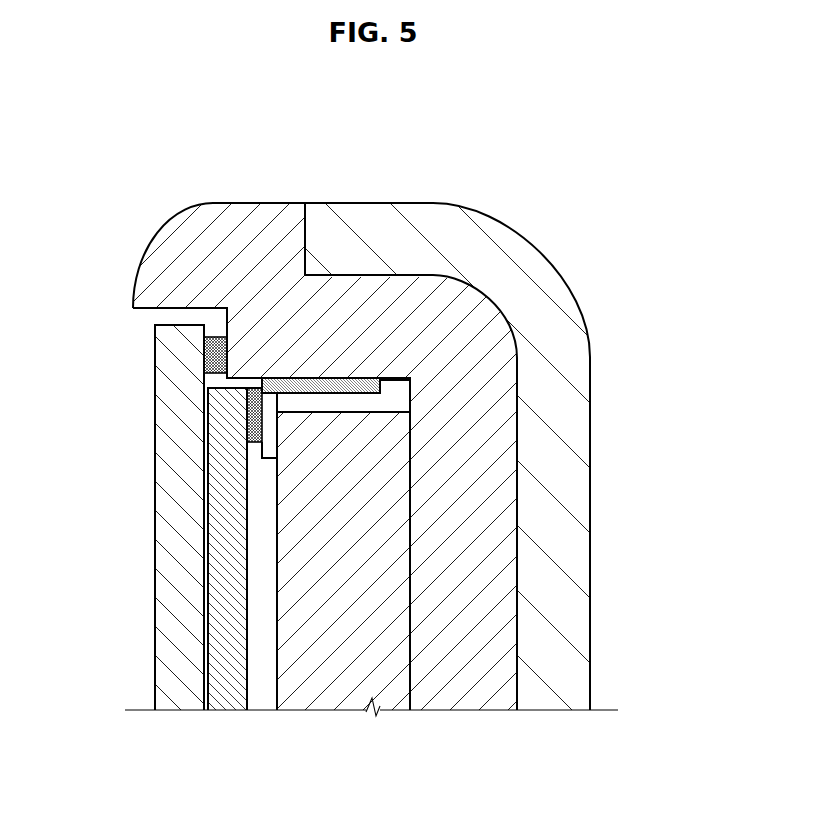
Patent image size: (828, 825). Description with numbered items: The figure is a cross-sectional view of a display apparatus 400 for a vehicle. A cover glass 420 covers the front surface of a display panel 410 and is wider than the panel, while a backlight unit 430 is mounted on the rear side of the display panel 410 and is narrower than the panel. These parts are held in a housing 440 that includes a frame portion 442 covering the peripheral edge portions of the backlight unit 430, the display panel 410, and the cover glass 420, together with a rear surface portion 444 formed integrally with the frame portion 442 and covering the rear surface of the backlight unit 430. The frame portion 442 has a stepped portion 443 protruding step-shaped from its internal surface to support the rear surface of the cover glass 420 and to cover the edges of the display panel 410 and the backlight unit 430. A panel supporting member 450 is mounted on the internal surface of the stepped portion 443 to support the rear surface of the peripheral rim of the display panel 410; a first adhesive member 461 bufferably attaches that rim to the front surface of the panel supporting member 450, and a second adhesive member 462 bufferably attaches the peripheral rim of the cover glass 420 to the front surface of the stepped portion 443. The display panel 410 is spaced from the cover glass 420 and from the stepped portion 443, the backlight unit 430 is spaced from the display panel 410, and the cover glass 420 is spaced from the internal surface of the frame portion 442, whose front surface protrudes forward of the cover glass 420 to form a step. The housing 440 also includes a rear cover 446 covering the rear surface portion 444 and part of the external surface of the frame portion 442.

The display apparatus 400 is at (370, 451).
The display panel 410 is at (217, 550).
The cover glass 420 is at (166, 497).
The backlight unit 430 is at (333, 690).
The housing 440 is at (417, 427).
The frame portion 442 is at (216, 240).
The stepped portion 443 is at (238, 365).
The rear surface portion 444 is at (485, 567).
The rear cover 446 is at (455, 228).
The panel supporting member 450 is at (334, 384).
The first adhesive member 461 is at (248, 410).
The second adhesive member 462 is at (207, 348).